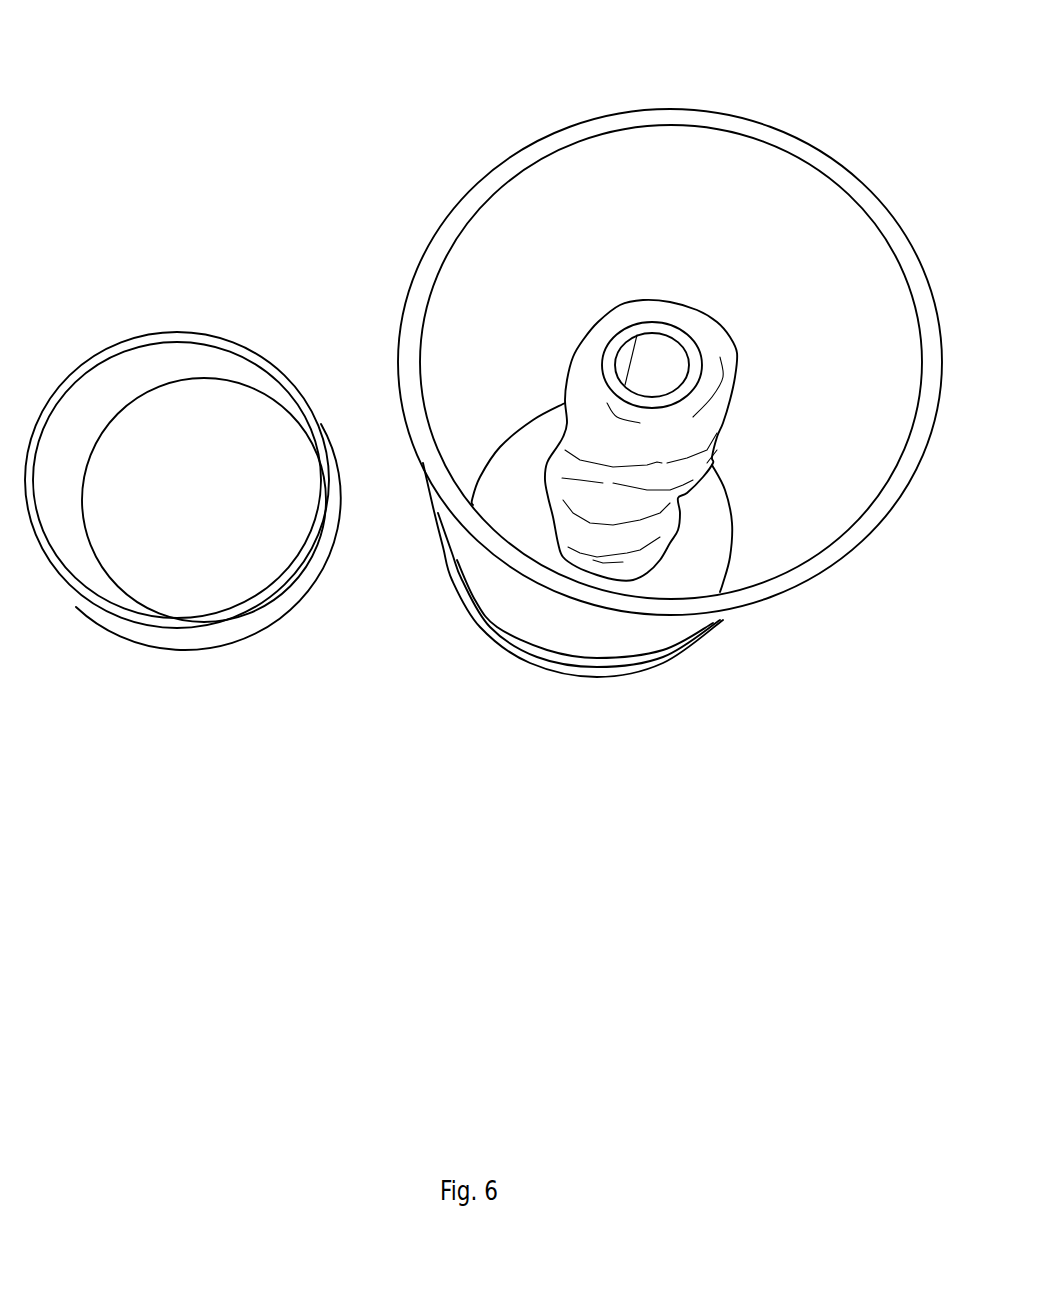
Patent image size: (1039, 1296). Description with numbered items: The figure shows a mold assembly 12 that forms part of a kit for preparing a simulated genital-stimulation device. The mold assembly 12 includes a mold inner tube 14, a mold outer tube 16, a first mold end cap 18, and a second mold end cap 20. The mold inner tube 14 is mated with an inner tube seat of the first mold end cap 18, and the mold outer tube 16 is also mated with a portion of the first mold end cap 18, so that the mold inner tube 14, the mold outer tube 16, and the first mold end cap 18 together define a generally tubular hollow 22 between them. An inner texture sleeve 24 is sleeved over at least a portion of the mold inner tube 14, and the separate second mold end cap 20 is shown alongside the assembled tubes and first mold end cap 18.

The mold assembly 12 is at (214, 78).
The mold inner tube 14 is at (675, 333).
The mold outer tube 16 is at (405, 312).
The first mold end cap 18 is at (488, 640).
The second mold end cap 20 is at (92, 362).
The tubular hollow 22 is at (780, 507).
The inner texture sleeve 24 is at (595, 323).